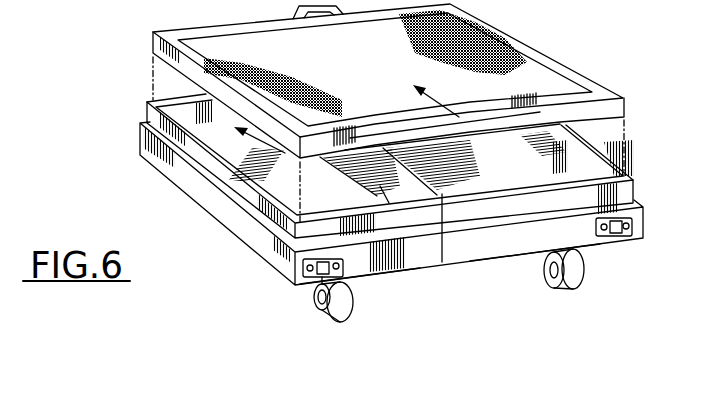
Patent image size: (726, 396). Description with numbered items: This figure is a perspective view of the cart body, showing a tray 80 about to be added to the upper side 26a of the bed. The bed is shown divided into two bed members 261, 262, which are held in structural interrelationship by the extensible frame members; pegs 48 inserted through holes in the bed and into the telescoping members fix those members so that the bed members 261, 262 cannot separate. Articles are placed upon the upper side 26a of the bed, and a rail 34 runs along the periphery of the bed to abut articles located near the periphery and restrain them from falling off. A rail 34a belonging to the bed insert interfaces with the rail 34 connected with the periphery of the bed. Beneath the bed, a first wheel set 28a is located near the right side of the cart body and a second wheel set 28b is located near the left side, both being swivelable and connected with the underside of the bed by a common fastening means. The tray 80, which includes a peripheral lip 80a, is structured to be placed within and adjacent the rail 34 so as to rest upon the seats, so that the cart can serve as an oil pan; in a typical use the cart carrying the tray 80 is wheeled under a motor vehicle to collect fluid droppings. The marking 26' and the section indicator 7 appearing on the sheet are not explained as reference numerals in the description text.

The cover screen 80 is at (504, 29).
The cover side flange 80a is at (153, 40).
The tray frame 26' is at (390, 156).
The tray panel 26a is at (353, 201).
The frame rail 34 is at (262, 246).
The cross rail 34a is at (477, 216).
The shelf support 48 is at (389, 203).
The lower frame member 261 is at (410, 271).
The lower frame member 262 is at (531, 261).
The caster 28a is at (317, 309).
The caster 28b is at (579, 273).
The section line 7- 7 is at (338, 113).